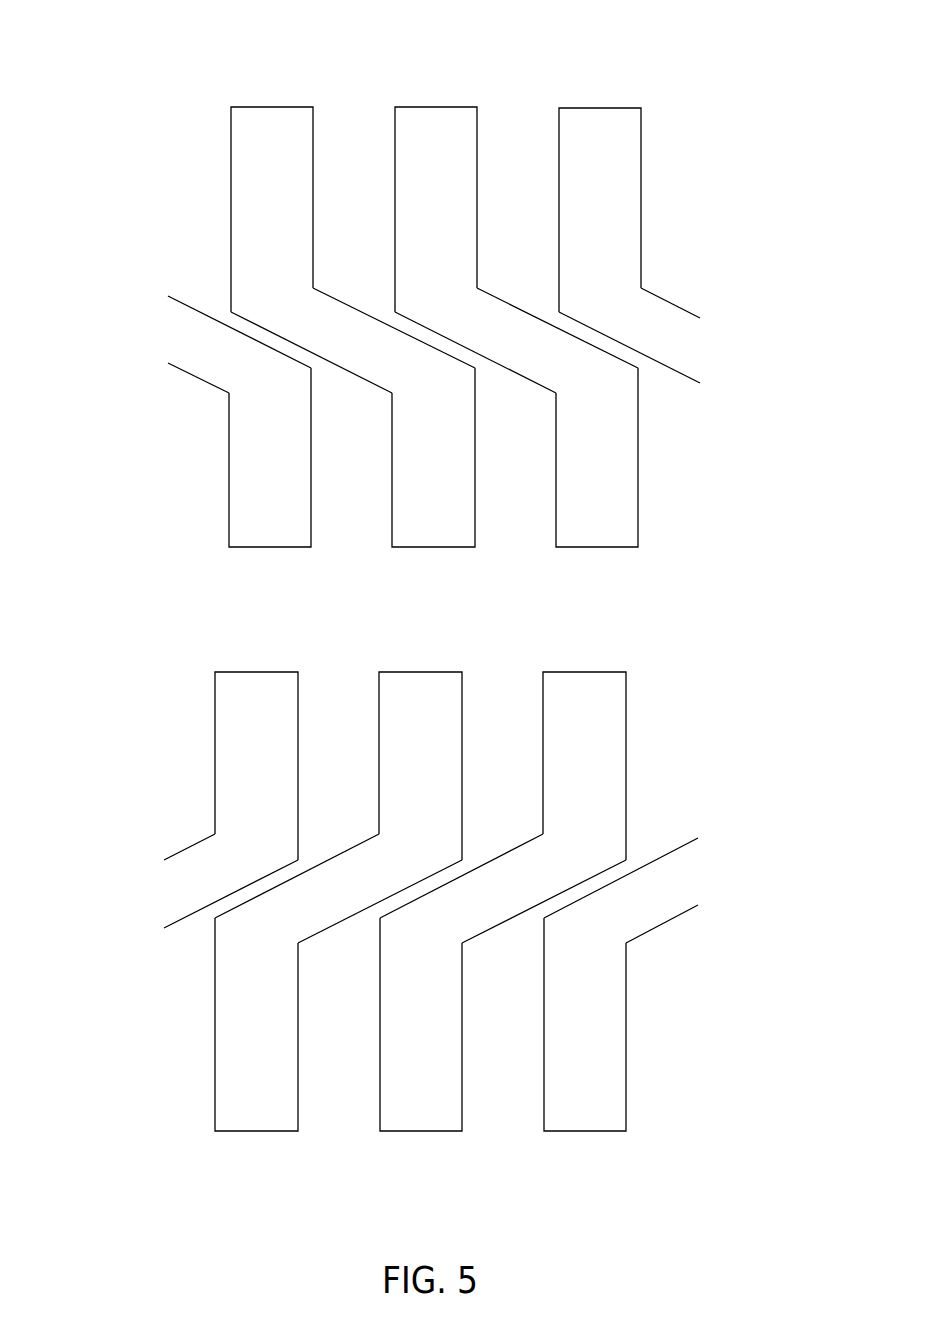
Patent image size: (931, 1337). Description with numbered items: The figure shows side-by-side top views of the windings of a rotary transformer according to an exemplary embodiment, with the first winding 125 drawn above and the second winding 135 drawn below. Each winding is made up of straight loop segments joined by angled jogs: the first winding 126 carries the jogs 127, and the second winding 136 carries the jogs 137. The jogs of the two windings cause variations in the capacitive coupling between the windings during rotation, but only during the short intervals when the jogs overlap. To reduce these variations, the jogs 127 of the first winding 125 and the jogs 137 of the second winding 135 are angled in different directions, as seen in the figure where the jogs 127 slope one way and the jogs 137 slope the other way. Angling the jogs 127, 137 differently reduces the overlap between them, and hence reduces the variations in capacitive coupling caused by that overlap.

The first winding 125 is at (164, 101).
The first winding 126 is at (272, 107).
The jogs 127 is at (408, 335).
The second winding 135 is at (163, 616).
The second winding 136 is at (268, 672).
The jogs 137 is at (330, 857).